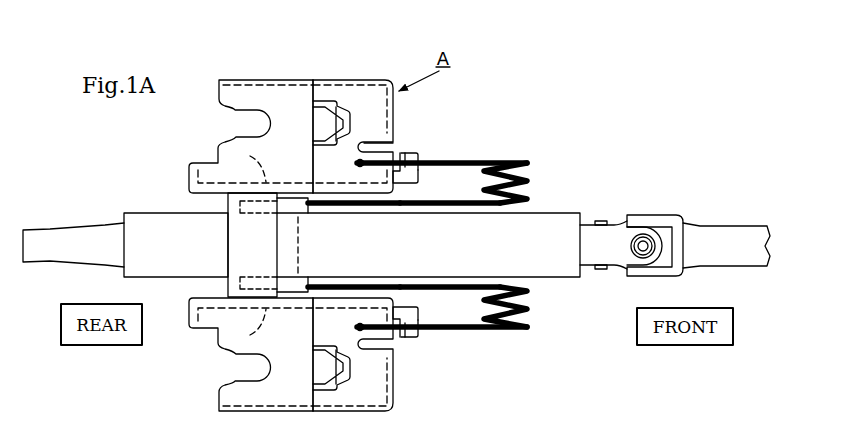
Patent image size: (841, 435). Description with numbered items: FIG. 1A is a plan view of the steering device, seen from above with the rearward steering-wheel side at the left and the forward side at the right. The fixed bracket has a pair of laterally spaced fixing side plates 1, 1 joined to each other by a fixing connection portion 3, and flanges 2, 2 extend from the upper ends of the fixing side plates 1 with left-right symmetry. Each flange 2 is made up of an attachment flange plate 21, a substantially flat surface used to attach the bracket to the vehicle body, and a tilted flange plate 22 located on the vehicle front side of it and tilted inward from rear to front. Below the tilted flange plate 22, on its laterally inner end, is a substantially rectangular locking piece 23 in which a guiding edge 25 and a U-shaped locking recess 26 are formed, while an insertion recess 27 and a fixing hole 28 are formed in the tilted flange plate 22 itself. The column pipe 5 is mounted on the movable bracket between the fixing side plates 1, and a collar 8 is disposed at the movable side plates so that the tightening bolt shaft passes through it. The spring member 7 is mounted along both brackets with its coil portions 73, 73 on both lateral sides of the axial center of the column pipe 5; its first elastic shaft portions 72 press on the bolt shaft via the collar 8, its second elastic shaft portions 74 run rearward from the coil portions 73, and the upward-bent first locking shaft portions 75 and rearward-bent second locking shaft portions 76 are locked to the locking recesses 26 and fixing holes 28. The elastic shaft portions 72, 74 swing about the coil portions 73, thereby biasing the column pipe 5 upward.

The fixing side plate 1 is at (251, 246).
The flange 2 is at (262, 38).
The attachment flange plate 21 is at (222, 72).
The tilted flange plate 22 is at (317, 72).
The fixing connection portion 3 is at (233, 238).
The column pipe 5 is at (149, 212).
The spring member 7 is at (514, 158).
The collar 8 is at (304, 243).
The locking piece 23 is at (414, 174).
The guiding edge 25 is at (419, 153).
The locking recess 26 is at (402, 153).
The insertion recess 27 is at (377, 146).
The fixing hole 28 is at (357, 163).
The first elastic shaft portion 72 is at (390, 209).
The coil portion 73 is at (531, 175).
The second elastic shaft portion 74 is at (478, 160).
The first locking shaft portion 75 is at (397, 182).
The second locking shaft portion 76 is at (359, 166).